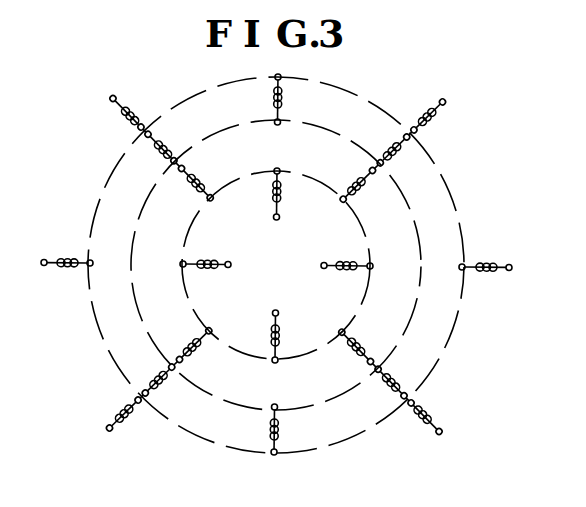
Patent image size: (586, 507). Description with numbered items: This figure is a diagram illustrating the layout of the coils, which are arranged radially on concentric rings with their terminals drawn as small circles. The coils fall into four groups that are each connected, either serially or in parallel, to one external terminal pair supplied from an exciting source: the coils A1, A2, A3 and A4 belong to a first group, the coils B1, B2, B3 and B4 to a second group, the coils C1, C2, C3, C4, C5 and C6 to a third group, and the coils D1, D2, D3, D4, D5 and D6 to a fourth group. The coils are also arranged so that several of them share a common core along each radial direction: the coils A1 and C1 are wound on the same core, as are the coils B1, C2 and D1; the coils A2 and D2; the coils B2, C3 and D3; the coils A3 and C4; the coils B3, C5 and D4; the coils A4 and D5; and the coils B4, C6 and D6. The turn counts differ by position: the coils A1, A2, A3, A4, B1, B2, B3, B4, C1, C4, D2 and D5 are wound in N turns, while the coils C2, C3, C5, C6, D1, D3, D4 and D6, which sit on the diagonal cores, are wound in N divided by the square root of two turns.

The coil A1 is at (294, 194).
The coil A2 is at (347, 250).
The coil A3 is at (293, 336).
The coil A4 is at (205, 249).
The coil B1 is at (357, 180).
The coil B2 is at (363, 342).
The coil B3 is at (192, 338).
The coil B4 is at (202, 178).
The coil C1 is at (295, 99).
The coil C2 is at (393, 145).
The coil C3 is at (397, 377).
The coil C4 is at (292, 429).
The coil C5 is at (158, 373).
The coil C6 is at (169, 143).
The coil D1 is at (428, 112).
The coil D2 is at (485, 252).
The coil D3 is at (431, 411).
The coil D4 is at (122, 406).
The coil D5 is at (67, 248).
The coil D6 is at (134, 107).